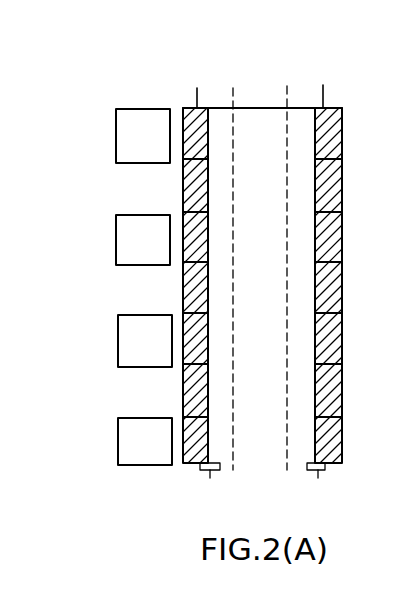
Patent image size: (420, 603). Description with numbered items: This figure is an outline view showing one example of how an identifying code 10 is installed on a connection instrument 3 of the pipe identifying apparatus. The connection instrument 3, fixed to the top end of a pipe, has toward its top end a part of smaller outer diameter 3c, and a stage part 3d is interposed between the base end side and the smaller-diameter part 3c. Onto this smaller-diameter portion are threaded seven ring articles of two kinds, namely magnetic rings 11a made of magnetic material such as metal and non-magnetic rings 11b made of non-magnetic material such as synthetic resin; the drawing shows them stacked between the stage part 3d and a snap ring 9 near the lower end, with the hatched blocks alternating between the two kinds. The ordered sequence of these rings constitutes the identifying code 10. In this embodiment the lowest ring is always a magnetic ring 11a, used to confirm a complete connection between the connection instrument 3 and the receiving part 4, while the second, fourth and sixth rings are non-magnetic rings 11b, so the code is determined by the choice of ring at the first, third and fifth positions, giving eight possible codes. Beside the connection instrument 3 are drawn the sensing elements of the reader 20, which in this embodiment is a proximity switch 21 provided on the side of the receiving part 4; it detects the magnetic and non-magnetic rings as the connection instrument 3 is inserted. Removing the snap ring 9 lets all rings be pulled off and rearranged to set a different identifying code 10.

The connection instrument 3 is at (325, 85).
The part of smaller outer diameter 3c is at (211, 362).
The stage part 3d is at (196, 106).
The receiving part 4 is at (112, 199).
The snap ring 9 is at (325, 471).
The identifying code 10 is at (366, 274).
The magnetic ring 11a is at (345, 130).
The non-magnetic ring 11b is at (345, 172).
The reader 20 is at (86, 287).
The proximity switch 21 is at (116, 150).